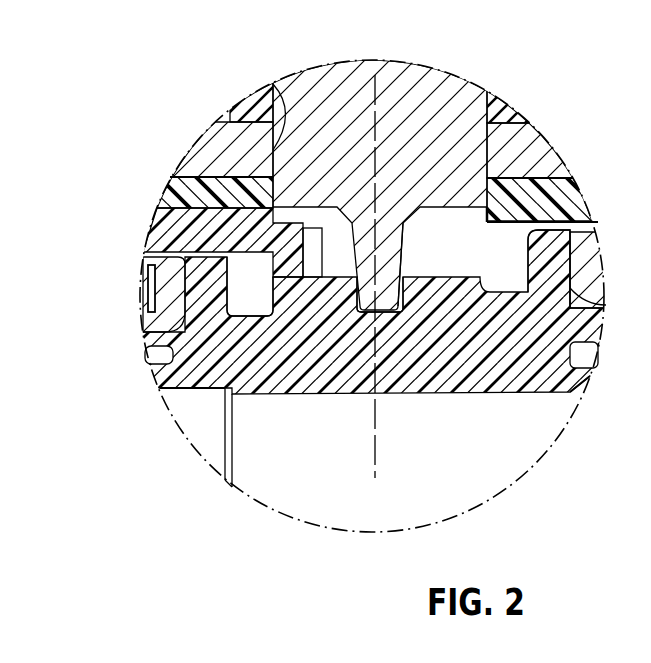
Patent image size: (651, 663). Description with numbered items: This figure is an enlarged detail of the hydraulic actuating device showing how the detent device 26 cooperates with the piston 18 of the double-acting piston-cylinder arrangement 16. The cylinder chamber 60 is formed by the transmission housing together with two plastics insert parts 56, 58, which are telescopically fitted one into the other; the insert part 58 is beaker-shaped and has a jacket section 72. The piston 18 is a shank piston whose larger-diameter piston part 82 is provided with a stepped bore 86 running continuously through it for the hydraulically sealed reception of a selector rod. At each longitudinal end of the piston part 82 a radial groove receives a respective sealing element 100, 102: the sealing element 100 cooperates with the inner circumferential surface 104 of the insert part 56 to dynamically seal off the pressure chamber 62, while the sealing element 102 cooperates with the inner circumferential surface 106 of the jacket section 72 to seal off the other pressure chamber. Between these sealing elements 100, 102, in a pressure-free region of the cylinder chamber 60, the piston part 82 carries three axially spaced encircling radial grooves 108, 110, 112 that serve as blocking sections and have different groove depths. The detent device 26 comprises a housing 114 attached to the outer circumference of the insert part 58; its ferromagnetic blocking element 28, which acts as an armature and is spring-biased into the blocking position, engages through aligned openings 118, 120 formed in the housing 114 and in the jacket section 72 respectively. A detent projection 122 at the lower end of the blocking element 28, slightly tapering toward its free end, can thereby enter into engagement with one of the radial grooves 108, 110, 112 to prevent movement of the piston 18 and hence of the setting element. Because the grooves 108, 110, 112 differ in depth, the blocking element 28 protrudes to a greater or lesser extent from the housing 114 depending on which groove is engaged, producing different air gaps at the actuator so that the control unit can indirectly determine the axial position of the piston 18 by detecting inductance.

The piston-cylinder arrangement 16 is at (588, 204).
The piston 18 is at (576, 395).
The detent device 26 is at (464, 80).
The blocking element 28 is at (393, 118).
The insert part 56 is at (158, 226).
The insert part 58 is at (160, 390).
The cylinder chamber 60 is at (488, 260).
The pressure chamber 62 is at (145, 290).
The jacket section 72 is at (585, 200).
The piston part 82 is at (310, 380).
The stepped bore 86 is at (448, 471).
The sealing element 100 is at (150, 334).
The sealing element 102 is at (592, 258).
The inner circumferential surface 104 is at (252, 258).
The inner circumferential surface 106 is at (594, 223).
The radial groove 108 is at (268, 322).
The radial groove 110 is at (400, 314).
The radial groove 112 is at (514, 232).
The housing 114 is at (218, 145).
The opening 118 is at (273, 84).
The opening 120 is at (528, 130).
The detent projection 122 is at (394, 262).